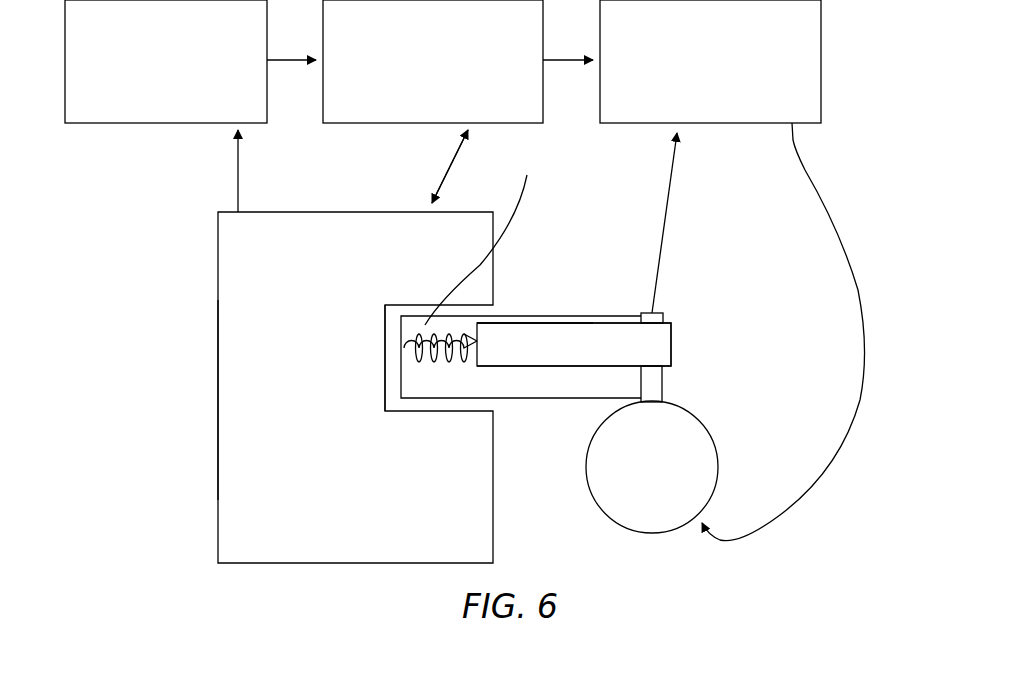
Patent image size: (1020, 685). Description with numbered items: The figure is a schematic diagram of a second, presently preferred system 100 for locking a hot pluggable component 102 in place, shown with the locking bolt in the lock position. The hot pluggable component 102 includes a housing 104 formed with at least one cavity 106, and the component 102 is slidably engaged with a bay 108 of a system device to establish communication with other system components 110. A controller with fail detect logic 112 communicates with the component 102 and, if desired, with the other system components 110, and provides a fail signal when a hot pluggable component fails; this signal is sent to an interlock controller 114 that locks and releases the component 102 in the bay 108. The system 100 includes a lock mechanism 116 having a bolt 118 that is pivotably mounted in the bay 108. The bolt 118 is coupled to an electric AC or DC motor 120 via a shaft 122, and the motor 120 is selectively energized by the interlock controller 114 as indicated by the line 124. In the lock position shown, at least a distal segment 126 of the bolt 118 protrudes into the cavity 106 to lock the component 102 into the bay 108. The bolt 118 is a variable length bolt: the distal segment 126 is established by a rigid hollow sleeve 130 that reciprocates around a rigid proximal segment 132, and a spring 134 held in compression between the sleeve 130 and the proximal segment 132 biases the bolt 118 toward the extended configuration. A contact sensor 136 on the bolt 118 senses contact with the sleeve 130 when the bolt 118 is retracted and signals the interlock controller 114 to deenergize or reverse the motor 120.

The system 100 is at (165, 302).
The hot pluggable component 102 is at (320, 405).
The housing 104 is at (218, 451).
The cavity 106 is at (485, 401).
The bay 108 is at (587, 222).
The other system components 110 is at (105, 123).
The controller with fail detect logic 112 is at (350, 123).
The interlock controller 114 is at (723, 123).
The lock mechanism 116 is at (682, 331).
The bolt 118 is at (592, 310).
The electric motor 120 is at (718, 448).
The shaft 122 is at (663, 384).
The line 124 is at (856, 280).
The distal segment 126 is at (487, 235).
The sleeve 130 is at (440, 364).
The proximal segment 132 is at (602, 362).
The spring 134 is at (465, 331).
The contact sensor 136 is at (660, 313).